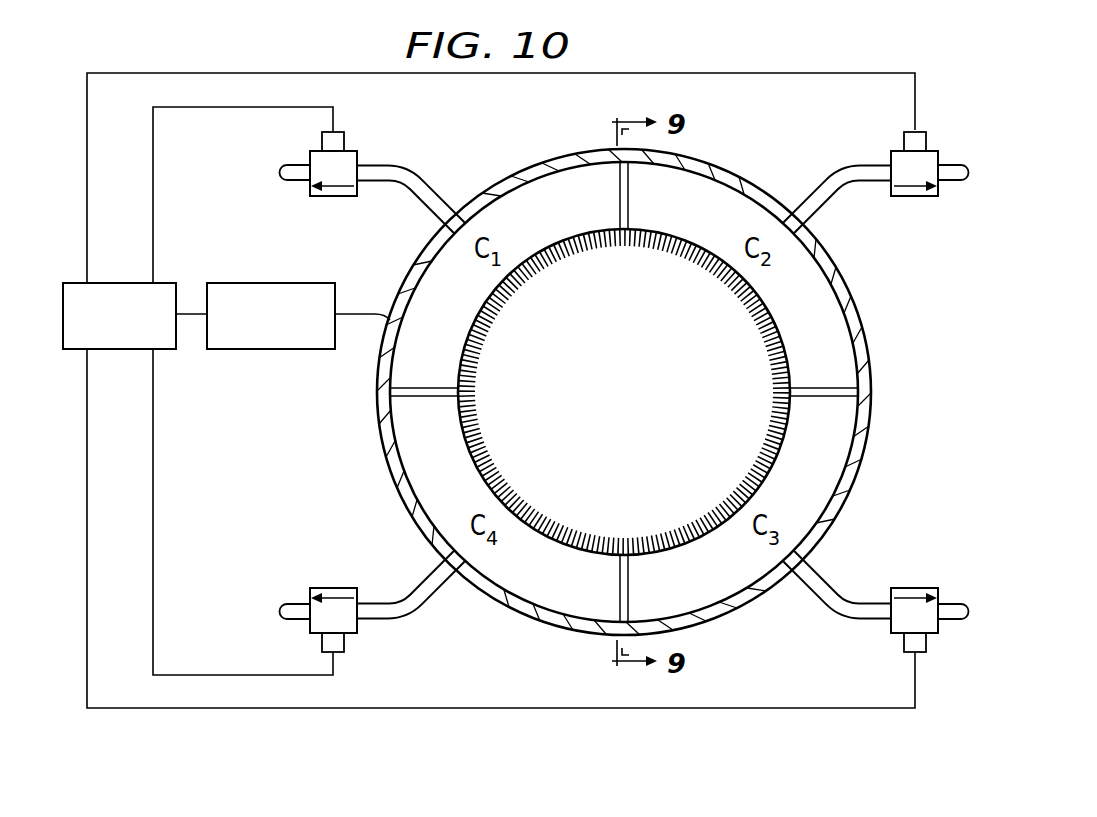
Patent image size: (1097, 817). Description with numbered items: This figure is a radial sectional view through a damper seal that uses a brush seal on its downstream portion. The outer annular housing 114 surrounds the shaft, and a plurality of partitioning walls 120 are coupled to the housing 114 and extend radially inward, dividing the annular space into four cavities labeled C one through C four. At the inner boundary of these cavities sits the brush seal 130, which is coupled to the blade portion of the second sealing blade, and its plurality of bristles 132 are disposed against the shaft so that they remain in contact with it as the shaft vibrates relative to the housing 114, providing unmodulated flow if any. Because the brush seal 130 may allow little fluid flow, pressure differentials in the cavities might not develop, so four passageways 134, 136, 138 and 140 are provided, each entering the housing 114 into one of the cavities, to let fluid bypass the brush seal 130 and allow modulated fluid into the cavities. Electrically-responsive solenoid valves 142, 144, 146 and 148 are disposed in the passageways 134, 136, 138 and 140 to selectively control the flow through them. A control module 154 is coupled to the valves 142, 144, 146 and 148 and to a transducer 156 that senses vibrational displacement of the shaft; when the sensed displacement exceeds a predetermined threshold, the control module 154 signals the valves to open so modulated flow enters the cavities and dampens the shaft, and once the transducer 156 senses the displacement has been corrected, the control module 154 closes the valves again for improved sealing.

The housing 114 is at (859, 469).
The partitioning walls 120 is at (630, 195).
The brush seal 130 is at (529, 285).
The bristles 132 is at (660, 240).
The passageway 134 is at (422, 182).
The passageway 136 is at (820, 183).
The passageway 138 is at (824, 604).
The passageway 140 is at (428, 601).
The solenoid valve 142 is at (331, 197).
The solenoid valve 144 is at (920, 197).
The solenoid valve 146 is at (922, 587).
The solenoid valve 148 is at (314, 587).
The control module 154 is at (120, 350).
The transducer 156 is at (248, 350).